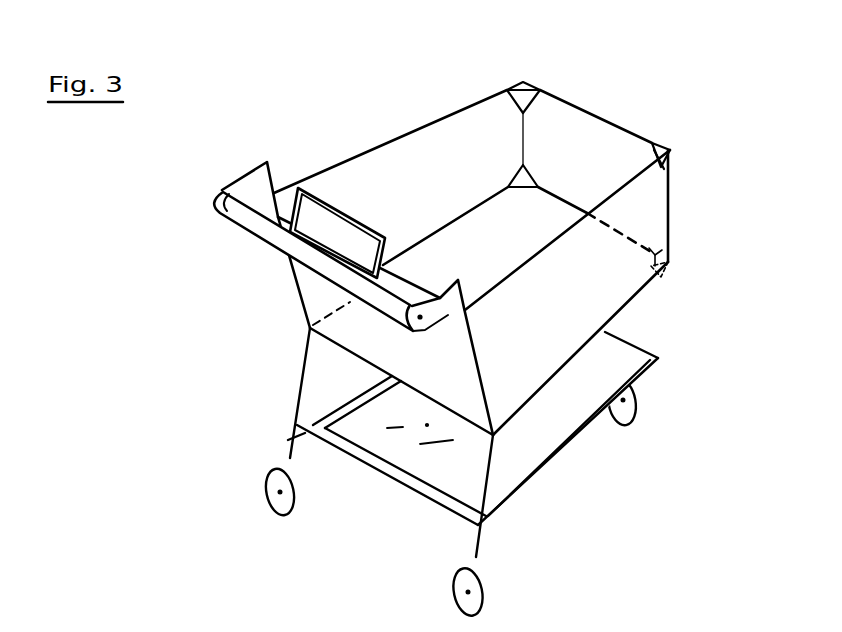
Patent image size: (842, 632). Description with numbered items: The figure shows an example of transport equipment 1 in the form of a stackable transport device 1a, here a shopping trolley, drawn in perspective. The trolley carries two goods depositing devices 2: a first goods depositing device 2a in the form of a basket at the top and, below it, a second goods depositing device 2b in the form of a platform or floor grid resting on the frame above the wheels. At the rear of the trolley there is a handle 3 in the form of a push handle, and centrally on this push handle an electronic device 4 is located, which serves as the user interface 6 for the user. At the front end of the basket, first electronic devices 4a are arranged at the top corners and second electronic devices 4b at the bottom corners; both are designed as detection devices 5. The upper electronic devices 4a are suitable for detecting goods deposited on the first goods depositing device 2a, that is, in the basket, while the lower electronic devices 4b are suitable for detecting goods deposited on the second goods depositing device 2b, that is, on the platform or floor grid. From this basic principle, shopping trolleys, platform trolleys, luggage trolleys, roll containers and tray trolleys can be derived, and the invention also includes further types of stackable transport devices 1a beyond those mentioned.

The transport equipment 1 is at (628, 96).
The transport device 1a is at (485, 315).
The container 2 is at (485, 269).
The first goods depositing device 2a is at (404, 189).
The second goods depositing device 2b is at (545, 428).
The handle 3 is at (272, 229).
The electronic device 4 is at (485, 169).
The first electronic devices 4a is at (525, 83).
The second electronic devices 4b is at (518, 171).
The detection devices 5 is at (572, 165).
The user interface 6 is at (335, 230).